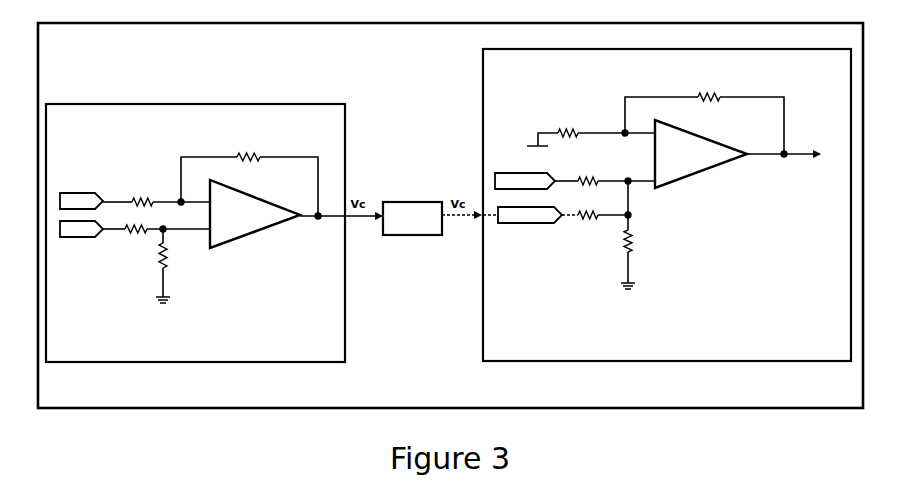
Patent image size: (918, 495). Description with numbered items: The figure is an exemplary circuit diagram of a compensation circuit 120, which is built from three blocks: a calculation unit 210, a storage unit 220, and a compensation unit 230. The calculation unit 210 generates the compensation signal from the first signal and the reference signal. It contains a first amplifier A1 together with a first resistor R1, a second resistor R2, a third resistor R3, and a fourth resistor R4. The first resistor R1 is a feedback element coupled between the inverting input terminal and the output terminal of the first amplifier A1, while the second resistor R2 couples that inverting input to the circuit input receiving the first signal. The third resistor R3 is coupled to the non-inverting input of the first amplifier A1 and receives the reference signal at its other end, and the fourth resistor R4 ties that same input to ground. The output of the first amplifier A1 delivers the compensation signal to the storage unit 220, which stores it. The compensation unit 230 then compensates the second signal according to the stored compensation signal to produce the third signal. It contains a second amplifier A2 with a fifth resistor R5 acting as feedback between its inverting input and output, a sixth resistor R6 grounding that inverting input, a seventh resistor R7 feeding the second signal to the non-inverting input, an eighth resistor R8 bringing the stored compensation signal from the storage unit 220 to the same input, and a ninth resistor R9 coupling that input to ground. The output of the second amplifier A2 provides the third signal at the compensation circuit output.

The compensation circuit 120 is at (450, 215).
The calculation unit 210 is at (195, 233).
The storage unit 220 is at (412, 218).
The compensation unit 230 is at (667, 205).
The first resistor R1 is at (249, 175).
The second resistor R2 is at (142, 193).
The third resistor R3 is at (136, 240).
The fourth resistor R4 is at (171, 266).
The fifth resistor R5 is at (704, 115).
The sixth resistor R6 is at (552, 129).
The seventh resistor R7 is at (588, 173).
The eighth resistor R8 is at (588, 208).
The ninth resistor R9 is at (643, 252).
The first amplifier A1 is at (255, 214).
The second amplifier A2 is at (701, 154).